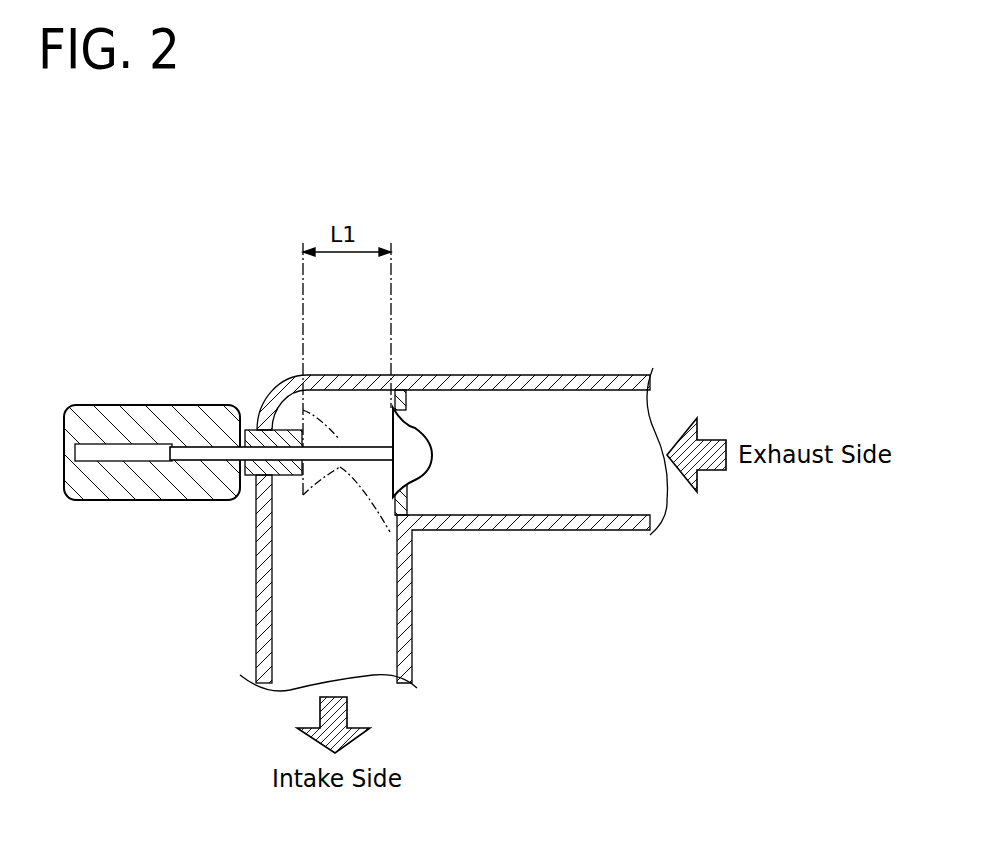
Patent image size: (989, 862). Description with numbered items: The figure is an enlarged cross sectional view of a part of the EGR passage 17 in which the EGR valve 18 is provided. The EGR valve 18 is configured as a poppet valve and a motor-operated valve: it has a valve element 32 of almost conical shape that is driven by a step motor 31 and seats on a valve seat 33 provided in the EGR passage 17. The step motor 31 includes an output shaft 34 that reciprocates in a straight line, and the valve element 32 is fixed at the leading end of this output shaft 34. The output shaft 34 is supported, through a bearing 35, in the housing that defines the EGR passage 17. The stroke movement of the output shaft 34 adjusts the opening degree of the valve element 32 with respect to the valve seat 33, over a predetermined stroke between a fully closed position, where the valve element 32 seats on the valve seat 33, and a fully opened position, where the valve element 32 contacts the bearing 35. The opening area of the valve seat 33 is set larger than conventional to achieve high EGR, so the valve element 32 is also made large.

The EGR passage 17 is at (625, 372).
The EGR valve 18 is at (355, 430).
The step motor 31 is at (127, 485).
The valve element 32 is at (428, 478).
The valve seat 33 is at (405, 405).
The output shaft 34 is at (205, 455).
The bearing 35 is at (255, 428).